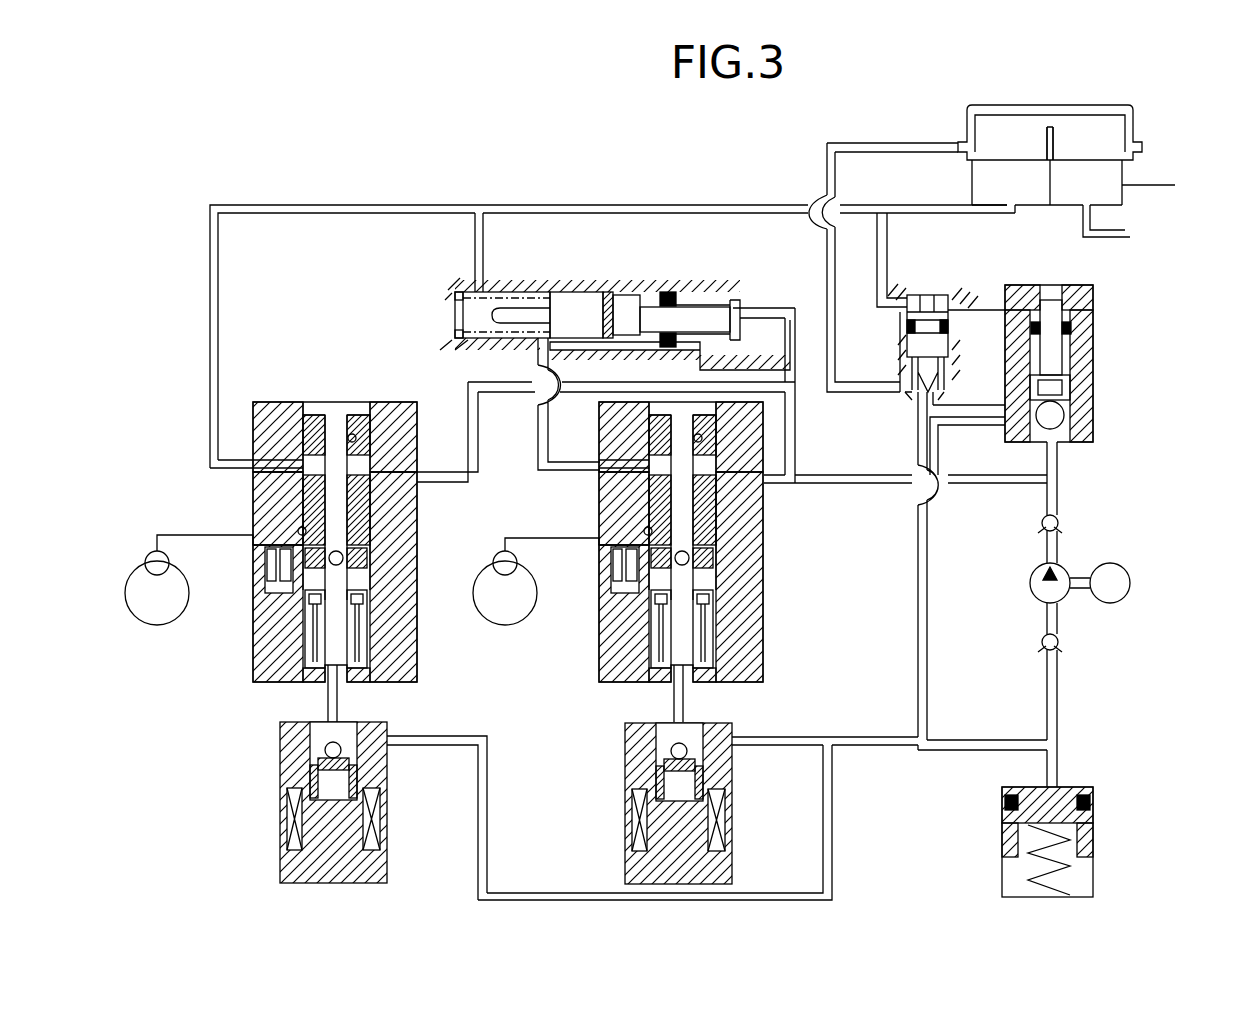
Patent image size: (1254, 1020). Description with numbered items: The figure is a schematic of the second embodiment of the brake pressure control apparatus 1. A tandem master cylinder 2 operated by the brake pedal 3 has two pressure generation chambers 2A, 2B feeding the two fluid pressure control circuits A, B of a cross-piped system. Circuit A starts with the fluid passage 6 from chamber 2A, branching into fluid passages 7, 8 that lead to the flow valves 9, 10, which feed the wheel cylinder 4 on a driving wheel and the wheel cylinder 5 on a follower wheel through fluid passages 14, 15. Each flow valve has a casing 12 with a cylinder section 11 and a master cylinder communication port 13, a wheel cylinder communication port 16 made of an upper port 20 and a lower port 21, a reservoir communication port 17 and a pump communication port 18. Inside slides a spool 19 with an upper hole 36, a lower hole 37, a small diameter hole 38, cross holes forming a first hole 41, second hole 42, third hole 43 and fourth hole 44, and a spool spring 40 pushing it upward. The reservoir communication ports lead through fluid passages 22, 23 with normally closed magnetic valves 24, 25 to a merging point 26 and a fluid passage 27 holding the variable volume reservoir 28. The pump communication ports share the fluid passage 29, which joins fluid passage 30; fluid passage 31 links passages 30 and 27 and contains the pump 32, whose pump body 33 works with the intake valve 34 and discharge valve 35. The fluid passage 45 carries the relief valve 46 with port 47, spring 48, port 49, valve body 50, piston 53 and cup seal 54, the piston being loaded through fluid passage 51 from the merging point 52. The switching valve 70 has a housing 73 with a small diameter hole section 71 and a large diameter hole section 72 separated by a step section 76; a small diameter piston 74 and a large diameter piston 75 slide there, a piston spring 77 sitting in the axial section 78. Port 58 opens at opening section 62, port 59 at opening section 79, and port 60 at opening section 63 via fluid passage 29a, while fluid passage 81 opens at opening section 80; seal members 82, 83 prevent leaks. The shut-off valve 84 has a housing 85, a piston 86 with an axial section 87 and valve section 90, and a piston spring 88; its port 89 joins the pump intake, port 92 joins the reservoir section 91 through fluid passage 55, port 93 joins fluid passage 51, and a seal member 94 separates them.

The brake pressure control apparatus 1 is at (1162, 470).
The tandem master cylinder 2 is at (1140, 131).
The pressure generation chamber 2A is at (1012, 172).
The pressure generation chamber 2B is at (1090, 172).
The brake pedal 3 is at (1208, 252).
The wheel cylinder 4 is at (500, 557).
The wheel cylinder 5 is at (150, 557).
The fluid passage 6 is at (660, 205).
The fluid passage 7 is at (475, 228).
The fluid passage 8 is at (210, 238).
The flow valve 9 is at (763, 525).
The flow valve 10 is at (417, 548).
The cylinder section 11 is at (395, 520).
The casing 12 is at (408, 408).
The master cylinder communication port 13 is at (290, 465).
The fluid passage 14 is at (505, 538).
The fluid passage 15 is at (178, 535).
The wheel cylinder communication port 16 is at (401, 611).
The reservoir communication port 17 is at (328, 686).
The pump communication port 18 is at (385, 452).
The spool 19 is at (375, 495).
The upper port 20 is at (268, 562).
The lower port 21 is at (280, 612).
The fluid passage 22 is at (790, 737).
The fluid passage 23 is at (482, 736).
The normally closed magnetic valve 24 is at (732, 790).
The normally closed magnetic valve 25 is at (387, 790).
The merging point 26 is at (832, 750).
The fluid passage 27 is at (975, 740).
The variable volume reservoir 28 is at (1093, 812).
The fluid passage 29 is at (527, 395).
The fluid passage 29a is at (835, 345).
The fluid passage 30 is at (963, 488).
The fluid passage 31 is at (1057, 690).
The pump 32 is at (1029, 583).
The pump body 33 is at (1030, 590).
The intake valve 34 is at (1017, 632).
The discharge valve 35 is at (1038, 535).
The upper hole 36 is at (360, 432).
The lower hole 37 is at (365, 625).
The small diameter hole 38 is at (365, 562).
The spool spring 40 is at (298, 682).
The first hole 41 is at (290, 488).
The second hole 42 is at (300, 530).
The third hole 43 is at (268, 665).
The fourth hole 44 is at (372, 438).
The fluid passage 45 is at (945, 414).
The relief valve 46 is at (1051, 360).
The port 47 is at (1058, 455).
The spring 48 is at (1075, 390).
The port 49 is at (1008, 425).
The valve body 50 is at (1066, 420).
The fluid passage 51 is at (995, 298).
The merging point 52 is at (888, 225).
The piston 53 is at (1065, 345).
The cup seal 54 is at (1070, 325).
The fluid passage 55 is at (826, 262).
The port 58 is at (478, 290).
The port 59 is at (538, 365).
The port 60 is at (827, 300).
The opening section 62 is at (460, 292).
The opening section 63 is at (745, 336).
The switching valve 70 is at (580, 273).
The small diameter hole section 71 is at (735, 310).
The large diameter hole section 72 is at (585, 298).
The housing 73 is at (455, 300).
The small diameter piston 74 is at (700, 318).
The large diameter piston 75 is at (608, 296).
The step section 76 is at (640, 300).
The piston spring 77 is at (470, 345).
The axial section 78 is at (528, 305).
The opening section 79 is at (457, 332).
The opening section 80 is at (672, 298).
The fluid passage 81 is at (715, 348).
The seal member 82 is at (628, 292).
The seal member 83 is at (690, 292).
The shut-off valve 84 is at (923, 311).
The housing 85 is at (950, 340).
The piston 86 is at (905, 318).
The axial section 87 is at (928, 294).
The piston spring 88 is at (952, 378).
The port 89 is at (918, 420).
The valve section 90 is at (888, 478).
The reservoir section 91 is at (965, 128).
The port 92 is at (912, 395).
The port 93 is at (890, 288).
The seal member 94 is at (943, 293).
The fluid pressure control circuit A is at (780, 198).
The fluid pressure control circuit B is at (1107, 242).